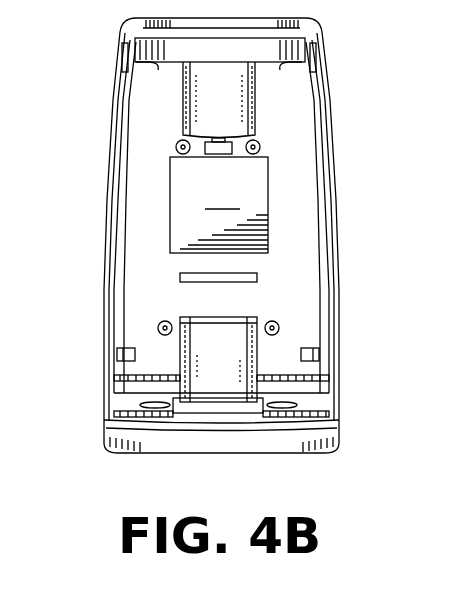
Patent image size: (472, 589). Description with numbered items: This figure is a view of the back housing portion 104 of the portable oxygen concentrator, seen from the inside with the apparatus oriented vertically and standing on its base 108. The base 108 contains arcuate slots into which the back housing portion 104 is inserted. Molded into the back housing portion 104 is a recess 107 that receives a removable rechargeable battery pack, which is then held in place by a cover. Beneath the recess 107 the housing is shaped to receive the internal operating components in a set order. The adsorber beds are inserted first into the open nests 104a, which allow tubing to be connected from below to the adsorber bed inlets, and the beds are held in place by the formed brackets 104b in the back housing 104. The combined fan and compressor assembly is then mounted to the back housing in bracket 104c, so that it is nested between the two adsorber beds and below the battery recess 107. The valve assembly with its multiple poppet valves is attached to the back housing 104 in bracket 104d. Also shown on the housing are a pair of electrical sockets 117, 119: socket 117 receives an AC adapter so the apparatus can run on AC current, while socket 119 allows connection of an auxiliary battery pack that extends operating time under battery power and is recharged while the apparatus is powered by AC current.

The back housing portion 104 is at (337, 317).
The open nests 104a is at (110, 420).
The formed brackets 104b is at (157, 65).
The bracket 104c is at (223, 350).
The bracket 104d is at (223, 108).
The recess 107 is at (219, 210).
The base 108 is at (250, 455).
The electrical socket 117 is at (118, 353).
The electrical socket 119 is at (320, 353).